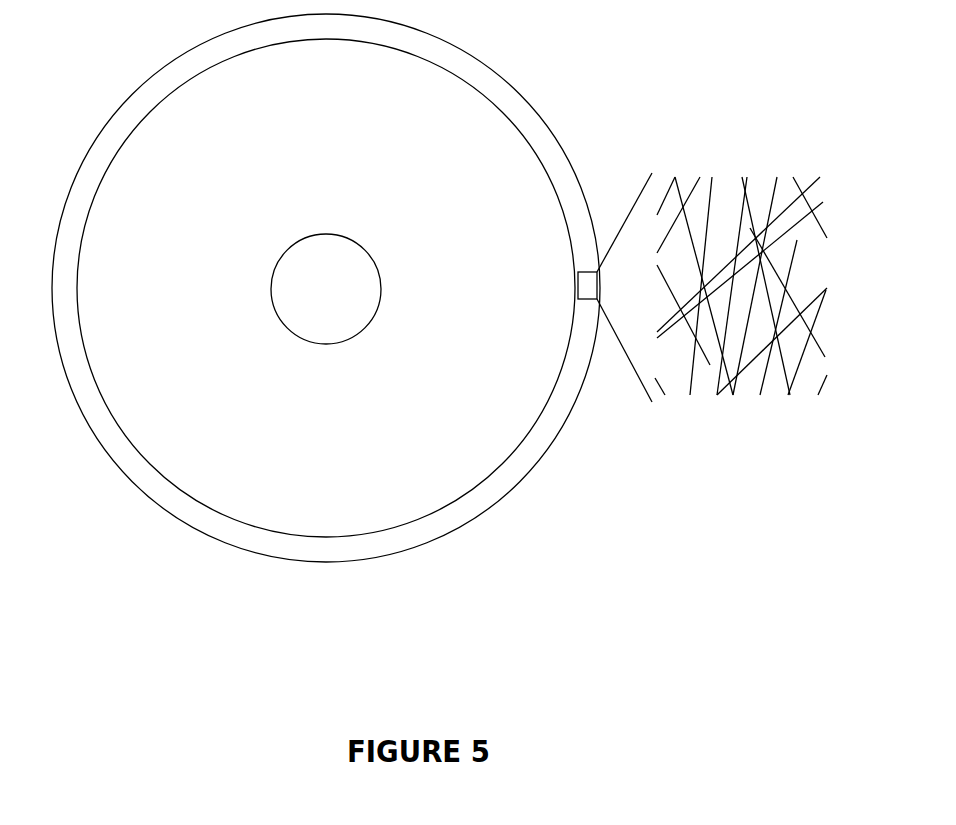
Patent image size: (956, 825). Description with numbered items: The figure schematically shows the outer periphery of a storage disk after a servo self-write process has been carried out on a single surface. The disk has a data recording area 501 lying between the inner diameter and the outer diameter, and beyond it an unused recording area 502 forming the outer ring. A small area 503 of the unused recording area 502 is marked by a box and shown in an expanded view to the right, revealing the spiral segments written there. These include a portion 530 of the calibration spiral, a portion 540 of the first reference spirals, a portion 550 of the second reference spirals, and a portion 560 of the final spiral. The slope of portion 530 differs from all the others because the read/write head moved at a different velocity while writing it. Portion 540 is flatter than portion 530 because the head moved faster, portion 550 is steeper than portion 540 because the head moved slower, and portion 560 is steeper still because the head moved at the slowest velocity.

The data recording area 501 is at (342, 40).
The unused recording area 502 is at (412, 430).
The area of unused recording area 503 is at (578, 279).
The portion of calibration spiral 530 is at (693, 383).
The portion of first reference spirals 540 is at (810, 184).
The portion of second reference spirals 550 is at (733, 182).
The portion of final spiral 560 is at (798, 378).